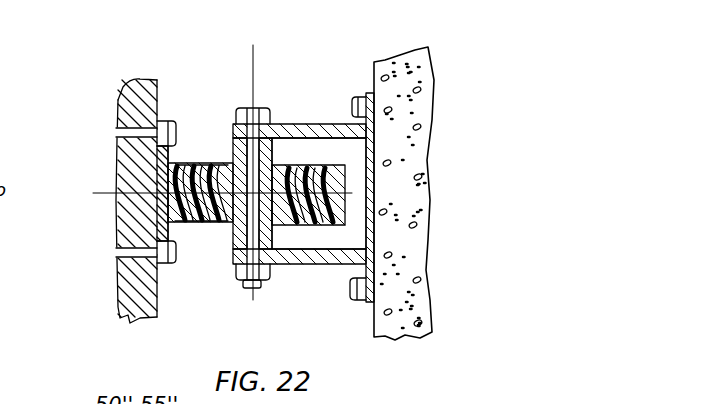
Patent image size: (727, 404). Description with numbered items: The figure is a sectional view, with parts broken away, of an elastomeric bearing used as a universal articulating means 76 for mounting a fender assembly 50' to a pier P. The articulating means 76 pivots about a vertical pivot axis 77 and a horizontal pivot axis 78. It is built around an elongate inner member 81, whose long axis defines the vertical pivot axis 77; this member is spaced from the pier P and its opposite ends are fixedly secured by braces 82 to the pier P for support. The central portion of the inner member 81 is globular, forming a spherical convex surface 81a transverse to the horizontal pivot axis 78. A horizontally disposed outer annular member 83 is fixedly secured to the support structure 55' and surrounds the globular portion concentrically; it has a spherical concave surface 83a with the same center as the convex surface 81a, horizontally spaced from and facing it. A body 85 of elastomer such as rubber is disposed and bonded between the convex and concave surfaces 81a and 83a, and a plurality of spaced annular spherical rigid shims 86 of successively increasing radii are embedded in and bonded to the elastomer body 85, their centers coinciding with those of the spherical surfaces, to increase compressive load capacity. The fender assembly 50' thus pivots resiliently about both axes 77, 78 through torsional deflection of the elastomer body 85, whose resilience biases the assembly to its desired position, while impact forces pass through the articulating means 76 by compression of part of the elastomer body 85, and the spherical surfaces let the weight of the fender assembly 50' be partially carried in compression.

The fender assembly 50' is at (130, 182).
The support structure 55' is at (168, 159).
The universal articulating means 76 is at (273, 98).
The vertical pivot axis 77 is at (253, 50).
The horizontal pivot axis 78 is at (253, 195).
The elongate inner member 81 is at (233, 224).
The spherical convex surface 81a is at (228, 223).
The braces 82 is at (338, 125).
The outer annular member 83 is at (168, 204).
The spherical concave surface 83a is at (165, 176).
The elastomer body 85 is at (217, 163).
The annular spherical rigid shims 86 is at (195, 167).
The pier P is at (421, 205).